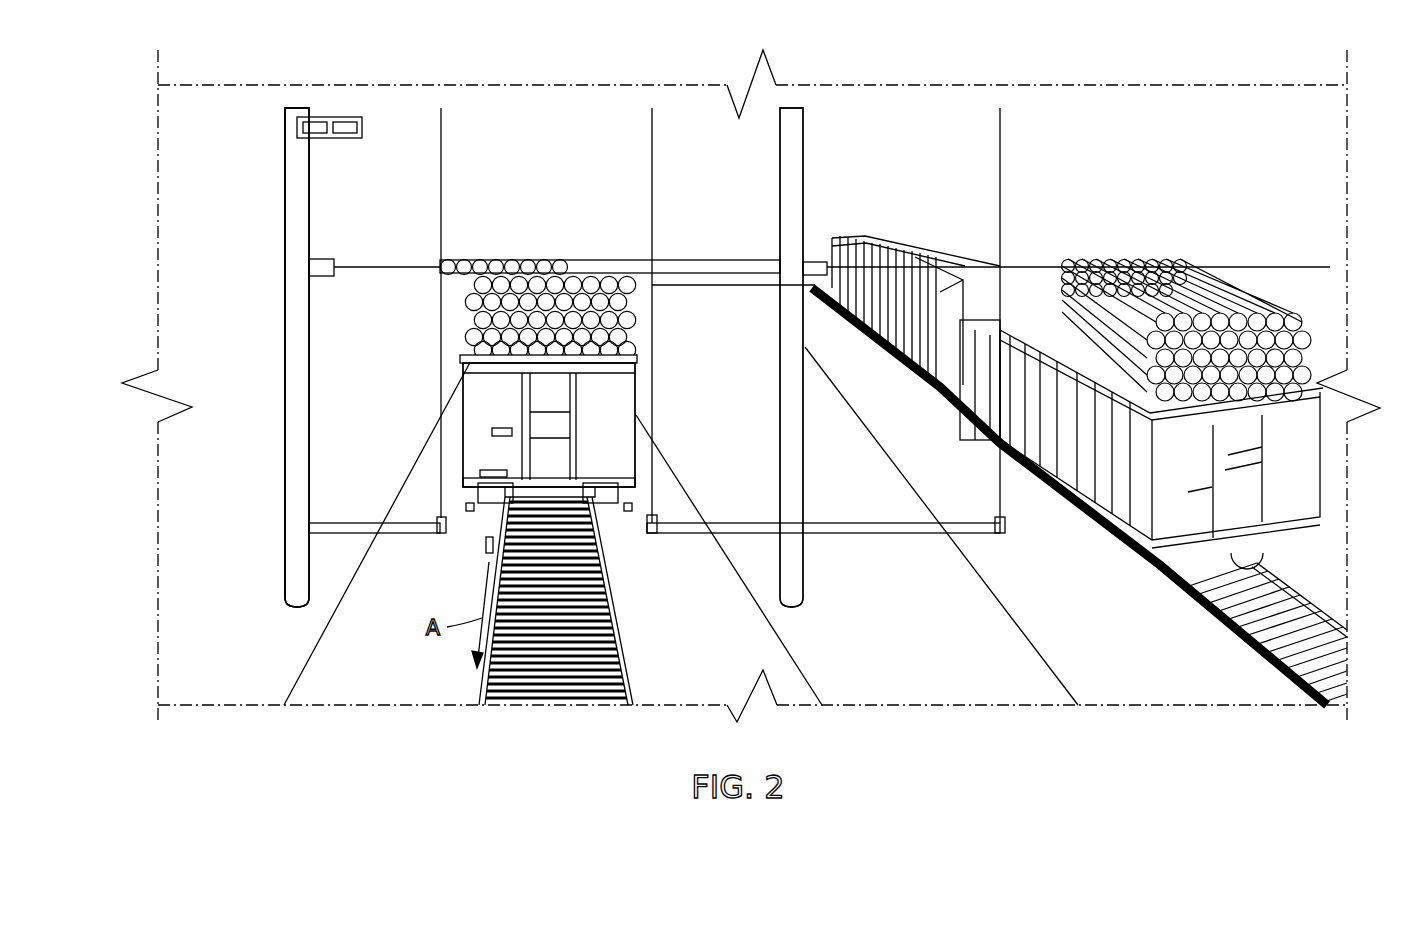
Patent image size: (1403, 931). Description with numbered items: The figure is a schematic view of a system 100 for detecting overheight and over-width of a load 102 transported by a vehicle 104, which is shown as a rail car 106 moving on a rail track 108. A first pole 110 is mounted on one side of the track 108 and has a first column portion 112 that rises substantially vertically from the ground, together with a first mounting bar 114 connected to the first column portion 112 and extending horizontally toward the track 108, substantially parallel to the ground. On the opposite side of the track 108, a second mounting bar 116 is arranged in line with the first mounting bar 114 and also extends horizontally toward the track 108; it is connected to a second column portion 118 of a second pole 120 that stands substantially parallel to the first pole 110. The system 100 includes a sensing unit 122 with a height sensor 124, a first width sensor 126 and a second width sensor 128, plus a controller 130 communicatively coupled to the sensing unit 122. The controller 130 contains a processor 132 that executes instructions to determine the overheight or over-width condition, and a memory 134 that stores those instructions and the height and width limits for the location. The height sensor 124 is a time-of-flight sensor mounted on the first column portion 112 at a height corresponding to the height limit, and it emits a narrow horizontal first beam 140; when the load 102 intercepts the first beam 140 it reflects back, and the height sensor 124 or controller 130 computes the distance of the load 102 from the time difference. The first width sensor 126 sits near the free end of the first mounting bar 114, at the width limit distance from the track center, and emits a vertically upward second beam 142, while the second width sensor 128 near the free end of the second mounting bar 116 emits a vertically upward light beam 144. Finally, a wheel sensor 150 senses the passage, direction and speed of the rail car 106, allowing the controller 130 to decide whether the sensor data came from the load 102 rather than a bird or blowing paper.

The system 100 is at (283, 152).
The load 102 is at (628, 320).
The vehicle 104 is at (472, 394).
The rail car 106 is at (607, 448).
The rail track 108 is at (562, 686).
The first pole 110 is at (282, 462).
The first column portion 112 is at (296, 261).
The first mounting bar 114 is at (342, 533).
The second mounting bar 116 is at (700, 537).
The second column portion 118 is at (796, 572).
The second pole 120 is at (810, 160).
The sensing unit 122 is at (305, 240).
The height sensor 124 is at (328, 257).
The first width sensor 126 is at (437, 518).
The second width sensor 128 is at (654, 515).
The controller 130 is at (318, 117).
The processor 132 is at (310, 120).
The memory 134 is at (345, 120).
The first beam 140 is at (375, 277).
The second beam 142 is at (438, 348).
The light beam 144 is at (655, 178).
The wheel sensor 150 is at (483, 545).